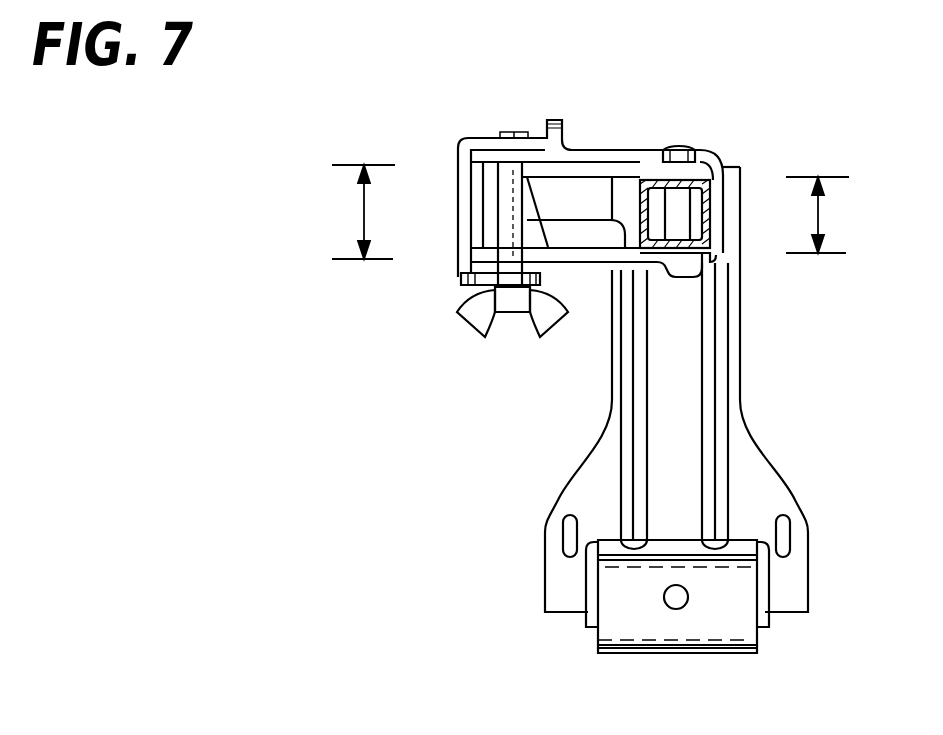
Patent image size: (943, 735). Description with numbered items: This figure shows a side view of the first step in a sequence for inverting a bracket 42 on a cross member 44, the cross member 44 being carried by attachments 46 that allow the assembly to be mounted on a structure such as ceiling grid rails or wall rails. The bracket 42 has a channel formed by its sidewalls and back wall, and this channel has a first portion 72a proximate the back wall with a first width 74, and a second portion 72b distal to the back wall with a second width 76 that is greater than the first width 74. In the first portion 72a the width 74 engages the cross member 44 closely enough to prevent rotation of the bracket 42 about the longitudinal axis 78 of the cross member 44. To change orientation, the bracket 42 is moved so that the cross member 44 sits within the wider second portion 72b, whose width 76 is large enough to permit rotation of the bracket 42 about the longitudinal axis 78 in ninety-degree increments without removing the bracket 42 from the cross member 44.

The bracket 42 is at (603, 148).
The cross member 44 is at (700, 172).
The attachments 46 is at (557, 505).
The first portion of channel 72a is at (723, 243).
The second portion of channel 72b is at (583, 190).
The first width 74 is at (818, 220).
The second width 76 is at (360, 220).
The longitudinal axis 78 is at (675, 213).